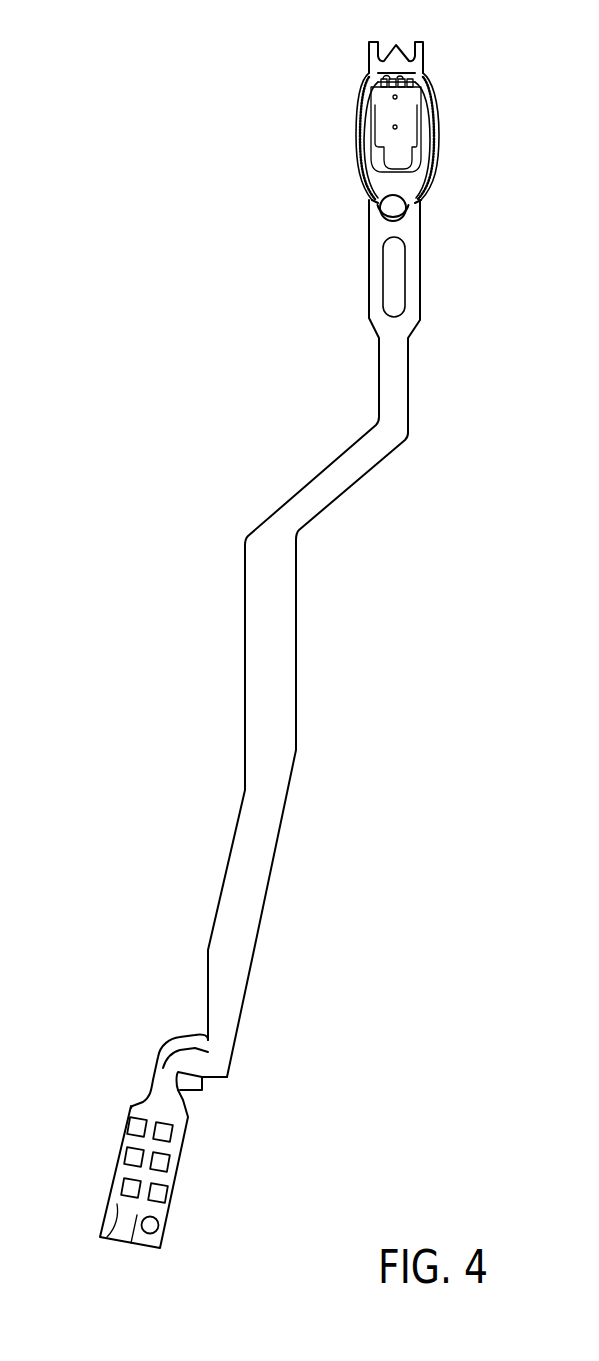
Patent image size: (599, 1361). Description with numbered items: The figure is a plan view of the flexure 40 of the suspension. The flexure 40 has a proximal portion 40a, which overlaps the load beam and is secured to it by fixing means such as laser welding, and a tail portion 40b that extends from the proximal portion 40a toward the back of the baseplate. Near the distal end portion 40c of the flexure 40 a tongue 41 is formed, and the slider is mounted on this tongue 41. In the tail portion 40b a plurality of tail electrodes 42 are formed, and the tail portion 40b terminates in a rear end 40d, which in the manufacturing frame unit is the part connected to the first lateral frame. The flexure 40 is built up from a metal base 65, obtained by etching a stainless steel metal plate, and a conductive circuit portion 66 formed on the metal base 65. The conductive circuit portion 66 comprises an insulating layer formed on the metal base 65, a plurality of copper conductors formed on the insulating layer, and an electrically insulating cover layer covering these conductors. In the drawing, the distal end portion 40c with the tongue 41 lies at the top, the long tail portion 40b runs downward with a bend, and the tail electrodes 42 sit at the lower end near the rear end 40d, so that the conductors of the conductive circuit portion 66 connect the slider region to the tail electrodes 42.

The flexure 40 is at (276, 653).
The proximal portion 40a is at (372, 238).
The tail portion 40b is at (253, 920).
The distal end portion 40c is at (418, 43).
The rear end 40d is at (140, 1248).
The tongue 41 is at (407, 118).
The tail electrodes 42 is at (121, 1182).
The metal base 65 is at (156, 1240).
The conductive circuit portion 66 is at (438, 161).